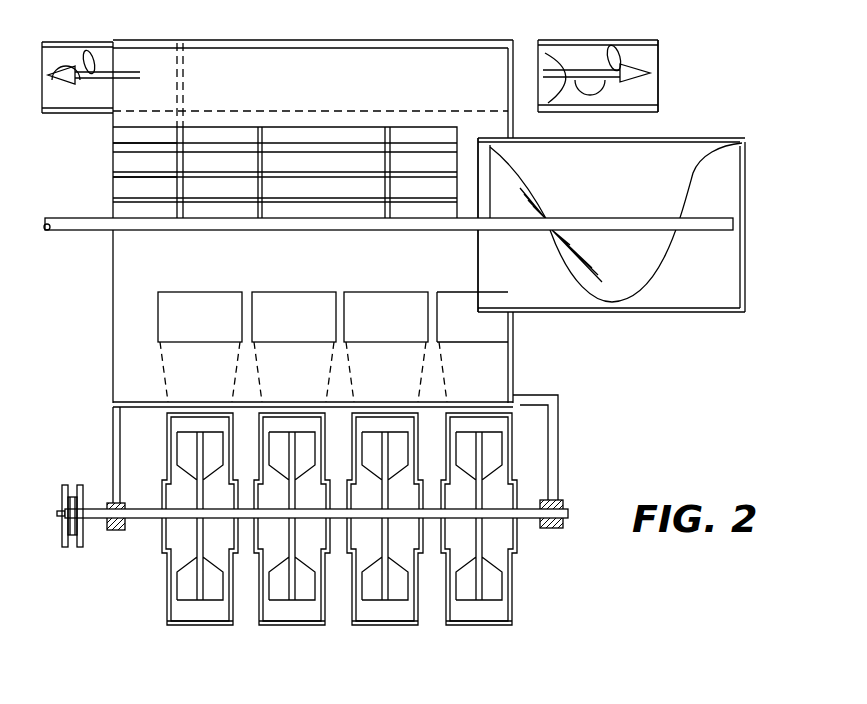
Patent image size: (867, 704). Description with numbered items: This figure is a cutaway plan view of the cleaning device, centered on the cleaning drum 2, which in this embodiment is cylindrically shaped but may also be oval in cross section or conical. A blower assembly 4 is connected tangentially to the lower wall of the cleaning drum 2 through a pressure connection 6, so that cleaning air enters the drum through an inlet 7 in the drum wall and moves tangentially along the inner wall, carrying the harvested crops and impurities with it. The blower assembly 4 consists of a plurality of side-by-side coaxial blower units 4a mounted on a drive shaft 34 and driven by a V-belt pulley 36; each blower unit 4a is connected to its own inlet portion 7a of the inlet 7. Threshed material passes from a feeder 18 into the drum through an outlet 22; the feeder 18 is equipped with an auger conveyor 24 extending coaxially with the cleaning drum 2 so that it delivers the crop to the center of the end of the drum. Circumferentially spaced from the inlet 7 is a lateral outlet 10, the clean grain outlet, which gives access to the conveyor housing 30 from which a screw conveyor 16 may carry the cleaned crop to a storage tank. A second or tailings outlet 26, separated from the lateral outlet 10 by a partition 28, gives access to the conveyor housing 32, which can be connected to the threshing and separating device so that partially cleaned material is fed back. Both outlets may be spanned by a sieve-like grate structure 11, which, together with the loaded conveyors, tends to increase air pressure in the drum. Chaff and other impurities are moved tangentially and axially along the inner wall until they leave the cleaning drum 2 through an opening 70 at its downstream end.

The cleaning drum 2 is at (105, 308).
The blower assembly 4 is at (522, 582).
The blower units 4a is at (207, 626).
The pressure connection 6 is at (163, 373).
The inlet 7 is at (268, 280).
The inlet portion 7a is at (323, 318).
The lateral outlet 10 is at (295, 160).
The grate structure 11 is at (397, 137).
The screw conveyor 16 is at (580, 45).
The feeder 18 is at (650, 318).
The outlet 22 is at (490, 138).
The auger conveyor 24 is at (694, 185).
The tailings outlet 26 is at (135, 188).
The partition 28 is at (185, 140).
The conveyor housing 30 is at (645, 57).
The conveyor housing 32 is at (86, 62).
The drive shaft 34 is at (145, 520).
The V-belt pulley 36 is at (70, 485).
The opening 70 is at (112, 143).